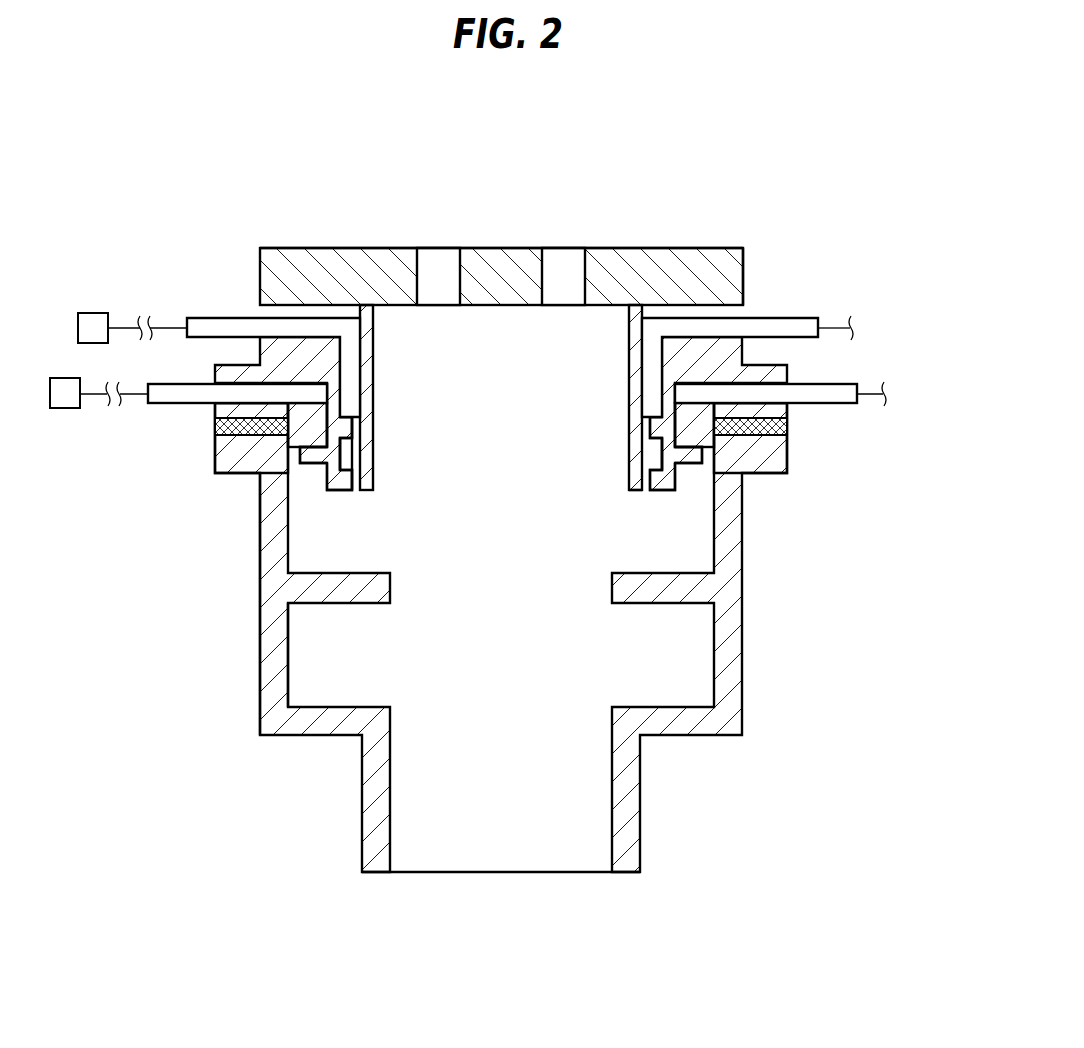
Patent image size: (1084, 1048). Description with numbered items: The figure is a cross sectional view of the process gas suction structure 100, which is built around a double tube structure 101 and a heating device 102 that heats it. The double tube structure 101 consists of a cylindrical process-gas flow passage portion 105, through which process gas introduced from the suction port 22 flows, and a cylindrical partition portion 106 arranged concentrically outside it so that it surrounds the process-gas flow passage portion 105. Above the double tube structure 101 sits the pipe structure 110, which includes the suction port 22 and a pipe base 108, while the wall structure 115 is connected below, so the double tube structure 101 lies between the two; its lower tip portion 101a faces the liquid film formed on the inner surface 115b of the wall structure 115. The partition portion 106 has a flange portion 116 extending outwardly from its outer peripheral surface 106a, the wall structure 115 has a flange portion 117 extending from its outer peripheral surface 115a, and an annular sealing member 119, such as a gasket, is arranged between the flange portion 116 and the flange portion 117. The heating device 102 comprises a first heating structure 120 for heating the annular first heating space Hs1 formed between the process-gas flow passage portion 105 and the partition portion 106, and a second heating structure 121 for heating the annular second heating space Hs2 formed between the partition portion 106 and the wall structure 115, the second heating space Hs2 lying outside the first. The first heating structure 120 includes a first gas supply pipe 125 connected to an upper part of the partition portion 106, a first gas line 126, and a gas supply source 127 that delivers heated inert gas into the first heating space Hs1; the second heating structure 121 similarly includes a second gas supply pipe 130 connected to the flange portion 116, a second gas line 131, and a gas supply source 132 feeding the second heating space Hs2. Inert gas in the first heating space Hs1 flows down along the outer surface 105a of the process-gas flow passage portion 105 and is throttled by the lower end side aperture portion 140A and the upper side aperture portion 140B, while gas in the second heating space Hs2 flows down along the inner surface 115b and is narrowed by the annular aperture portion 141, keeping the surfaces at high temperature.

The process gas suction structure 100 is at (582, 218).
The pipe structure 110 is at (709, 244).
The pipe base 108 is at (745, 272).
The suction port 22 is at (438, 307).
The double tube structure 101 is at (746, 314).
The tip portion 101a is at (643, 494).
The heating device 102 is at (865, 344).
The process-gas flow passage portion 105 is at (623, 410).
The outer surface of the process-gas flow passage portion 105a is at (656, 452).
The partition portion 106 is at (661, 494).
The outer peripheral surface of the partition portion 106a is at (745, 356).
The wall structure 115 is at (301, 742).
The outer peripheral surface of the wall structure 115a is at (260, 630).
The inner surface of the wall structure 115b is at (290, 663).
The flange portion of the double tube structure 116 is at (258, 364).
The flange portion of the wall structure 117 is at (233, 475).
The sealing member 119 is at (233, 437).
The first heating structure 120 is at (205, 309).
The second heating structure 121 is at (180, 382).
The first gas supply pipe 125 is at (233, 318).
The first gas line 126 is at (128, 327).
The gas supply source 127 is at (94, 313).
The second gas supply pipe 130 is at (163, 404).
The second gas line 131 is at (127, 404).
The gas supply source 132 is at (65, 409).
The lower end side aperture portion 140A is at (346, 492).
The upper side aperture portion 140B is at (356, 412).
The aperture portion 141 is at (304, 465).
The first heating space Hs1 is at (354, 372).
The second heating space Hs2 is at (310, 433).